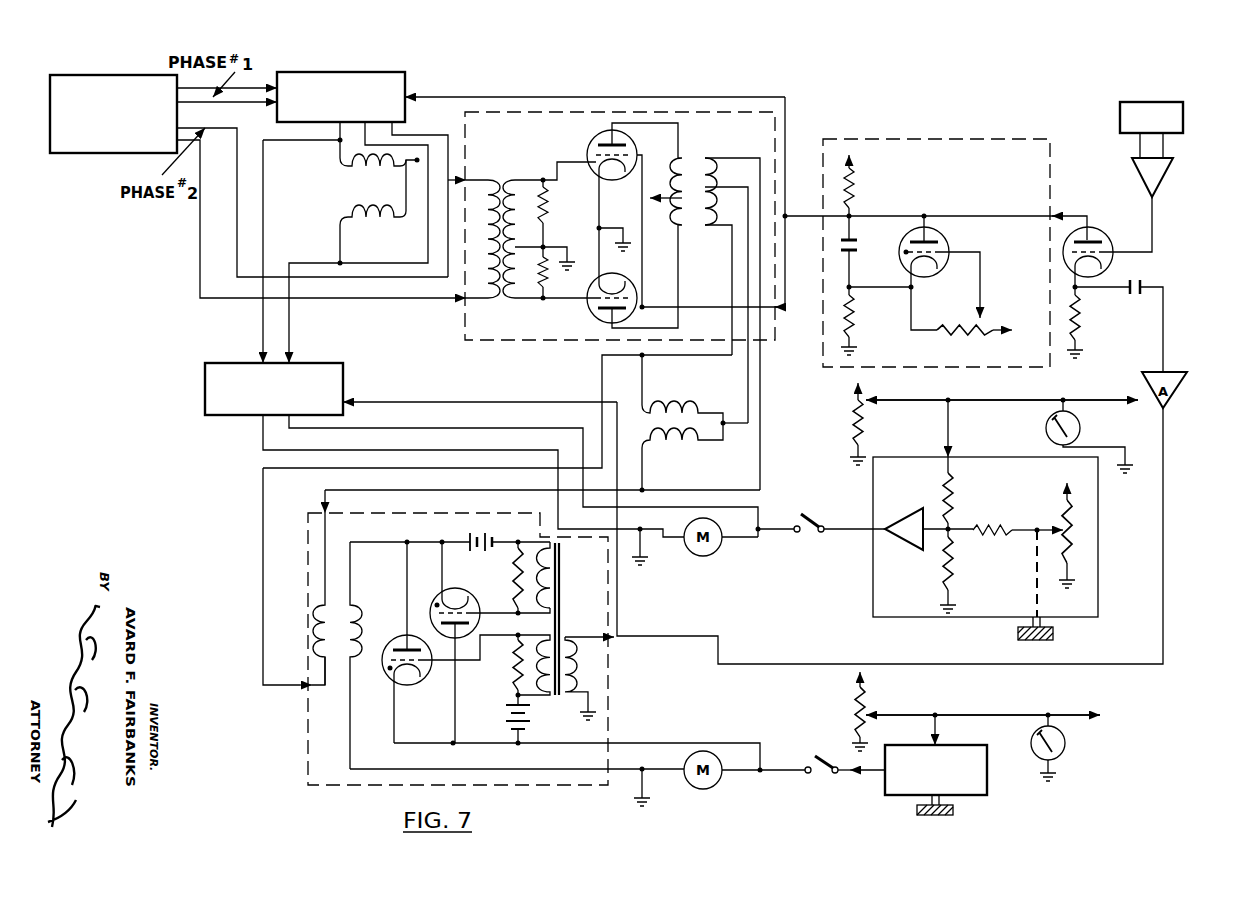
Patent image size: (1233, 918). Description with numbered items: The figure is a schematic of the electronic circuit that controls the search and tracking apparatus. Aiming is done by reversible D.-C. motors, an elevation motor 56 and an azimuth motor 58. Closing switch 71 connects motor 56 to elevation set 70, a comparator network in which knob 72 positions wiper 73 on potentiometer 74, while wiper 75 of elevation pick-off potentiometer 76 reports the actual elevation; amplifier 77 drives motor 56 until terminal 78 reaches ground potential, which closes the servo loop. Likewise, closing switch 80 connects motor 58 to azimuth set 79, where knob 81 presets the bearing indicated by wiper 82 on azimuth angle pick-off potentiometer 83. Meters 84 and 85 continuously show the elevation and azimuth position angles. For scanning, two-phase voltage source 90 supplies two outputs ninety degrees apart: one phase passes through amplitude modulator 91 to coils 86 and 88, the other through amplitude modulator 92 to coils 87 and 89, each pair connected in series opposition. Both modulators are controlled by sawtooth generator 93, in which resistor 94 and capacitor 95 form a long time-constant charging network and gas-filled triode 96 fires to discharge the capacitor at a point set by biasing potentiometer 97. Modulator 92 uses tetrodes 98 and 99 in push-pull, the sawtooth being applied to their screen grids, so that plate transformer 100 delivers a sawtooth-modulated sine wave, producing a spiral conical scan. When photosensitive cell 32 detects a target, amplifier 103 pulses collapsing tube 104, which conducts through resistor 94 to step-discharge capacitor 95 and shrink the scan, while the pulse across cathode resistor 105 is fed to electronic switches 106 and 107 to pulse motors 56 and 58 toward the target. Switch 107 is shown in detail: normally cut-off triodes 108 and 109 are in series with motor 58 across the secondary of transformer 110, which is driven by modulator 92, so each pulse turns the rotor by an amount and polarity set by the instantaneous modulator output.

The photosensitive cell 32 is at (1178, 118).
The elevation motor 56 is at (722, 545).
The azimuth motor 58 is at (718, 781).
The elevation set 70 is at (995, 598).
The switch 71 is at (803, 512).
The knob 72 is at (1055, 635).
The wiper 73 is at (1037, 522).
The potentiometer 74 is at (1076, 530).
The wiper 75 is at (922, 402).
The elevation pick-off potentiometer 76 is at (855, 413).
The amplifier 77 is at (893, 516).
The terminal 78 is at (952, 528).
The azimuth set 79 is at (893, 797).
The switch 80 is at (819, 776).
The knob 81 is at (955, 813).
The wiper 82 is at (906, 715).
The azimuth angle pick-off potentiometer 83 is at (876, 713).
The meter 84 is at (1046, 433).
The meter 85 is at (1063, 748).
The coil 86 is at (346, 168).
The coil 87 is at (690, 406).
The coil 88 is at (343, 212).
The coil 89 is at (690, 441).
The two-phase voltage source 90 is at (68, 153).
The amplitude modulator 91 is at (398, 89).
The amplitude modulator 92 is at (767, 133).
The sawtooth generator 93 is at (985, 143).
The resistor 94 is at (856, 201).
The capacitor 95 is at (856, 251).
The gas-filled triode 96 is at (933, 269).
The biasing potentiometer 97 is at (986, 321).
The tetrode 98 is at (590, 141).
The tetrode 99 is at (588, 307).
The plate transformer 100 is at (690, 162).
The amplifier 103 is at (1143, 183).
The collapsing tube 104 is at (1101, 246).
The cathode resistor 105 is at (1081, 326).
The electronic switch 106 is at (338, 391).
The electronic switch 107 is at (337, 748).
The triode 108 is at (390, 674).
The triode 109 is at (468, 600).
The transformer 110 is at (356, 617).